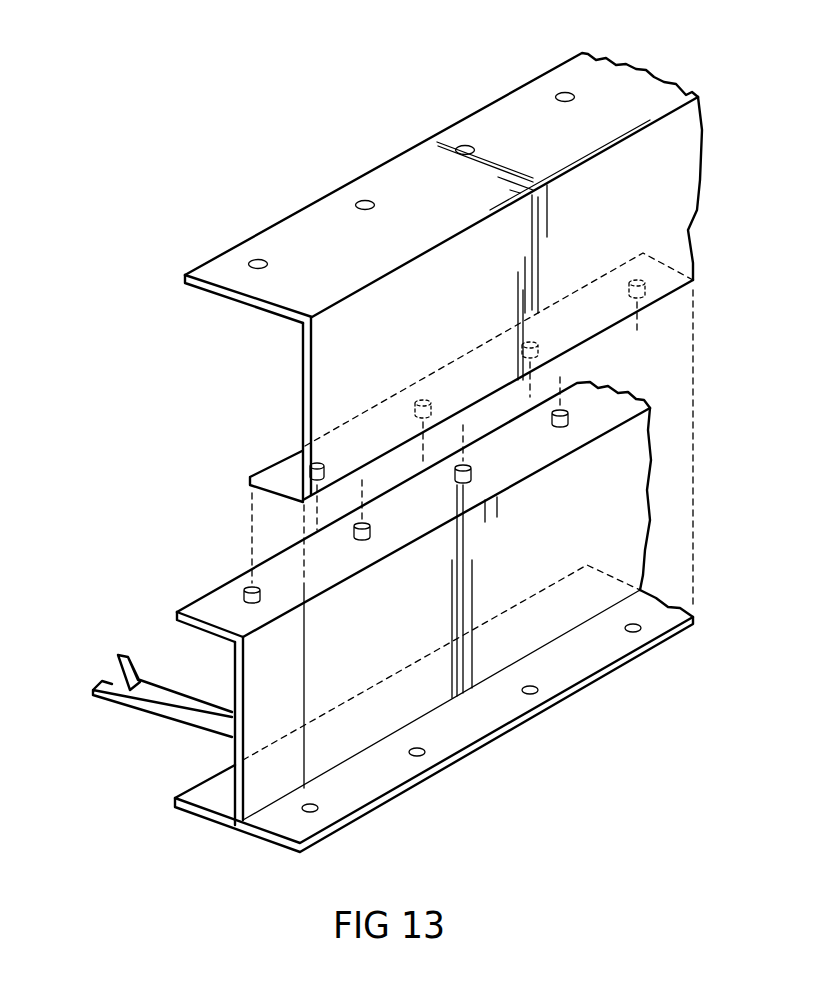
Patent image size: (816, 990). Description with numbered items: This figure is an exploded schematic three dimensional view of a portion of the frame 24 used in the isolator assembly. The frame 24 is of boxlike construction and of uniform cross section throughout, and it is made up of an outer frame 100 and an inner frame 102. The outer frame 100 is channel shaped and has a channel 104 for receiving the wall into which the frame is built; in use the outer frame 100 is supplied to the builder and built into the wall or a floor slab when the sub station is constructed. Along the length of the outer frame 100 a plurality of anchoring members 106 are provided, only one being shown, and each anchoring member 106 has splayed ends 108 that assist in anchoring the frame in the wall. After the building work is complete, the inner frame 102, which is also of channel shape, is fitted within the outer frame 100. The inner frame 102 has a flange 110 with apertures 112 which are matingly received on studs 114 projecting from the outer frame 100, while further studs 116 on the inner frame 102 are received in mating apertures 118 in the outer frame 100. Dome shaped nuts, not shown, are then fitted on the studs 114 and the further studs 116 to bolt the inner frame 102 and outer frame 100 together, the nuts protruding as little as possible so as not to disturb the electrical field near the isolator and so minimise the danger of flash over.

The frame 24 is at (382, 64).
The outer frame 100 is at (370, 733).
The inner frame 102 is at (303, 376).
The channel 104 is at (160, 650).
The anchoring member 106 is at (180, 712).
The splayed ends 108 is at (113, 657).
The flange 110 is at (403, 150).
The apertures 112 is at (468, 156).
The studs 114 is at (465, 478).
The further studs 116 is at (440, 392).
The mating apertures 118 is at (527, 696).